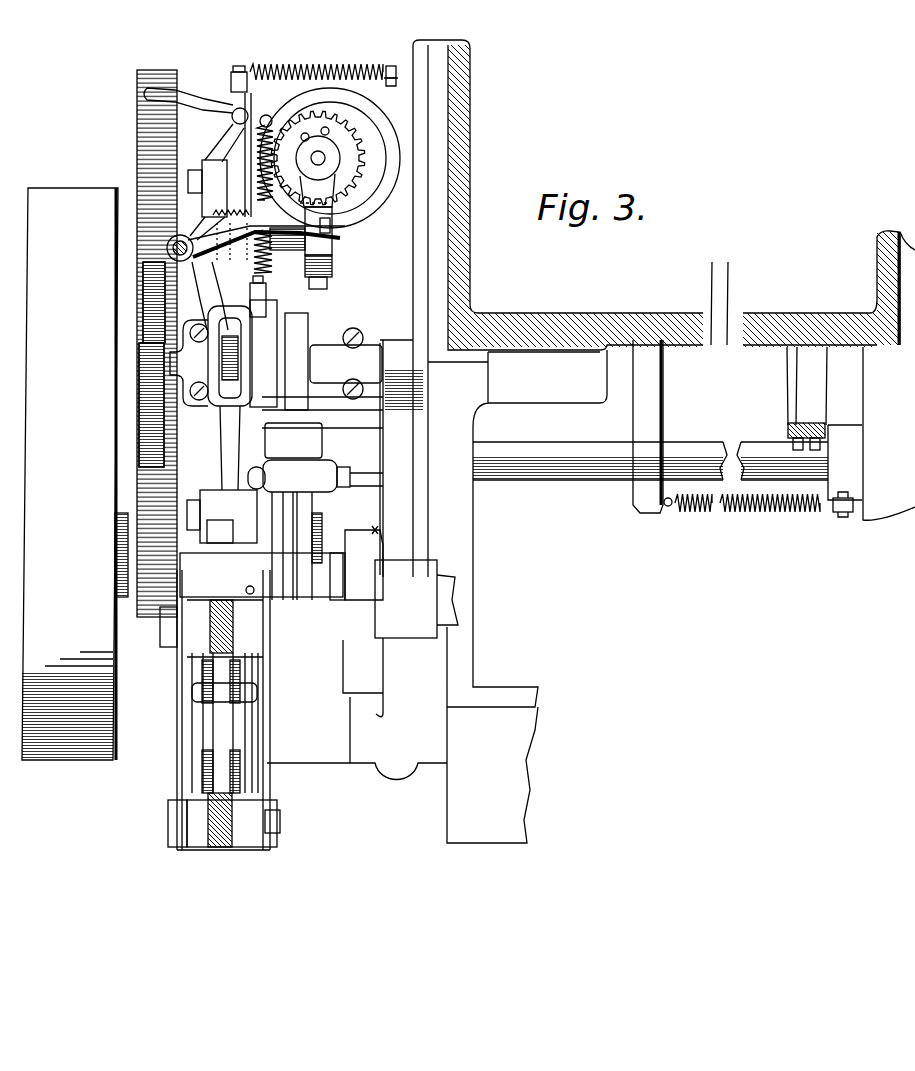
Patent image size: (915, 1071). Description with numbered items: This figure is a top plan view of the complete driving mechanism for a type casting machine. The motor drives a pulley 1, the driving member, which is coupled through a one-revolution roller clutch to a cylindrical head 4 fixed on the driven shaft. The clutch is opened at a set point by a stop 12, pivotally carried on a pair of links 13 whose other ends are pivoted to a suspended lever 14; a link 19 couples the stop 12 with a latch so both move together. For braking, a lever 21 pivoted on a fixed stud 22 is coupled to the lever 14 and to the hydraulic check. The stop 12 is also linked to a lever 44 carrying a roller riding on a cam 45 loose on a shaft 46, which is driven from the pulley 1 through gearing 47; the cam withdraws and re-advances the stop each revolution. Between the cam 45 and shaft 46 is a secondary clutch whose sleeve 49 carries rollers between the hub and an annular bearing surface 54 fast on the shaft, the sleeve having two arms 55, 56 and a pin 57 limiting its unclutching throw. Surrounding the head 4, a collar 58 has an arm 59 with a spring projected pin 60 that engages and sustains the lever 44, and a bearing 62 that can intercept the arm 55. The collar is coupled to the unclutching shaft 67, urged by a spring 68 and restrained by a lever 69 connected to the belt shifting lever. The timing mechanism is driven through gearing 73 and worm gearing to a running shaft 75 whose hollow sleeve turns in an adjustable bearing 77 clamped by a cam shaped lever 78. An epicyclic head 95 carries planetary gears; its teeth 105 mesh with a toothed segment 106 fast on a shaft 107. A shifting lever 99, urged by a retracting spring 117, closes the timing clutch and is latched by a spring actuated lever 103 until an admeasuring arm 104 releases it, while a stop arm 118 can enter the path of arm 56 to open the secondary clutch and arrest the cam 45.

The pulley 1 is at (70, 474).
The cylindrical head 4 is at (360, 527).
The stop 12 is at (252, 592).
The links 13 is at (270, 697).
The lever 14 is at (212, 805).
The link 19 is at (222, 668).
The lever 21 is at (228, 637).
The fixed stud 22 is at (167, 628).
The lever 44 is at (226, 445).
The cam 45 is at (211, 372).
The shaft 46 is at (137, 365).
The gearing 47 is at (135, 448).
The sleeve 49 is at (273, 380).
The annular bearing surface 54 is at (300, 364).
The arm 55 is at (300, 407).
The arm 56 is at (262, 326).
The pin 57 is at (343, 535).
The collar 58 is at (300, 538).
The arm 59 is at (317, 467).
The spring projected pin 60 is at (262, 475).
The bearing 62 is at (360, 341).
The unclutching shaft 67 is at (553, 467).
The spring 68 is at (752, 515).
The lever 69 is at (788, 428).
The gearing 73 is at (207, 722).
The running shaft 75 is at (320, 152).
The bearing 77 is at (345, 130).
The cam shaped lever 78 is at (240, 93).
The head 95 is at (344, 158).
The shifting lever 99 is at (300, 312).
The spring actuated lever 103 is at (333, 215).
The admeasuring arm 104 is at (332, 203).
The teeth 105 is at (313, 127).
The toothed segment 106 is at (322, 262).
The shaft 107 is at (167, 247).
The retracting spring 117 is at (318, 286).
The stop arm 118 is at (233, 313).